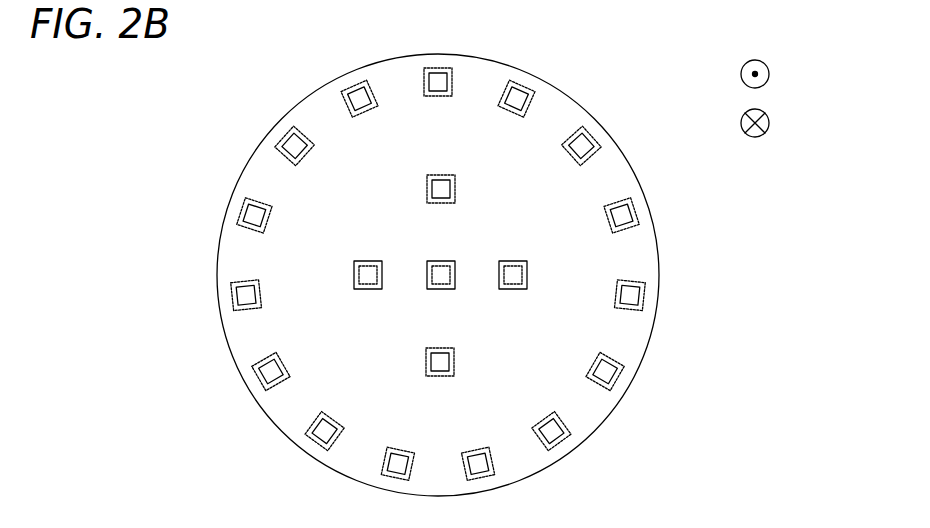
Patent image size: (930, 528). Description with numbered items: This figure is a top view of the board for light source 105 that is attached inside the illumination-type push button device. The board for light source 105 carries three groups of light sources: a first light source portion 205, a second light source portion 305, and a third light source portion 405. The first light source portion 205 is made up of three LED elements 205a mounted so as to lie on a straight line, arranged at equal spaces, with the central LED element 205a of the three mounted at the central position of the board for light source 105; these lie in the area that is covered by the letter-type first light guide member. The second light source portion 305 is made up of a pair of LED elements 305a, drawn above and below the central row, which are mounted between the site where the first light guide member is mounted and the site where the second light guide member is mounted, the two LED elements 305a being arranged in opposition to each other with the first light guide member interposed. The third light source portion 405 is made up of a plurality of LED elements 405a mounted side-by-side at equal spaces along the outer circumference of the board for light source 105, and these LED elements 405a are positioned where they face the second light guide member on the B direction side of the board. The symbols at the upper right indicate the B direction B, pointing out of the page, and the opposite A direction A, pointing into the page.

The board for light source 105 is at (626, 65).
The first light source portion 205 is at (598, 203).
The LED element 205a is at (369, 261).
The second light source portion 305 is at (157, 175).
The LED element 305a is at (427, 191).
The third light source portion 405 is at (718, 203).
The LED element 405a is at (636, 212).
The A direction A is at (770, 123).
The B direction B is at (770, 74).